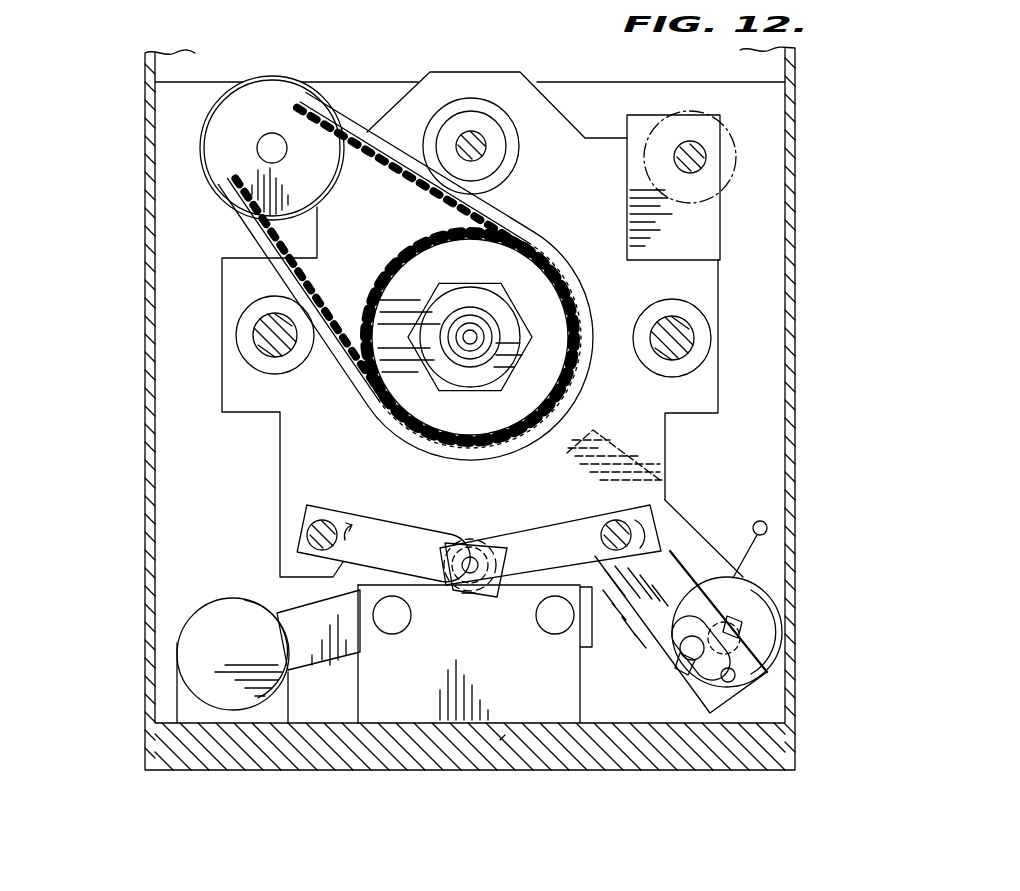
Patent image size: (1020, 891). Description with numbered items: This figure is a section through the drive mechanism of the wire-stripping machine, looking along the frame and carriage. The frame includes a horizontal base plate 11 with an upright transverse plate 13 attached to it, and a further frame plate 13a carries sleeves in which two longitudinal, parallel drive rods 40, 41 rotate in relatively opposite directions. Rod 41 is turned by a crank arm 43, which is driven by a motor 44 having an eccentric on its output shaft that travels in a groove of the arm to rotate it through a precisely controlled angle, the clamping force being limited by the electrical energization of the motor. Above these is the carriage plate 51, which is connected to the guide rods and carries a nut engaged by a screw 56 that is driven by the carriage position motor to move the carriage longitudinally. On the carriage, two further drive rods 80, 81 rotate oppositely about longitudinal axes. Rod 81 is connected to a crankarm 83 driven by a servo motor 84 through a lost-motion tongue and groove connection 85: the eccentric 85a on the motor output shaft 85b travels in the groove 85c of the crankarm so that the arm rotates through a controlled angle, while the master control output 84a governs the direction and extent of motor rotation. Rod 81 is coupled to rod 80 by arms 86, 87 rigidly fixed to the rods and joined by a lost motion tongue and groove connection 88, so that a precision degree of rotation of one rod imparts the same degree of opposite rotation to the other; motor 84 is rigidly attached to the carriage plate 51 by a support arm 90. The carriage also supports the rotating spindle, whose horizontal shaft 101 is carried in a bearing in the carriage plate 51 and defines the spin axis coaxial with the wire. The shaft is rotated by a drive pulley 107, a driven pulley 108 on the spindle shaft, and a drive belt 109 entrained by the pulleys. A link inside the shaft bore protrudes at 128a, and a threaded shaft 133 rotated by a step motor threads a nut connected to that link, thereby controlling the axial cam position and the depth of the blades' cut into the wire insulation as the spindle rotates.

The base plate 11 is at (345, 757).
The upright transverse plate 13 is at (170, 539).
The frame plate 13a is at (505, 735).
The drive rod 40 is at (556, 628).
The drive rod 41 is at (390, 622).
The crank arm 43 is at (313, 650).
The motor 44 is at (195, 645).
The carriage plate 51 is at (548, 135).
The screw 56 is at (702, 157).
The drive rod 80 is at (310, 530).
The drive rod 81 is at (620, 515).
The crankarm 83 is at (640, 605).
The servo motor 84 is at (768, 620).
The master control output 84a is at (762, 553).
The lost-motion tongue and groove connection 85 is at (682, 692).
The eccentric 85a is at (703, 686).
The output shaft 85b is at (748, 632).
The groove 85c is at (736, 675).
The arm 86 is at (515, 545).
The arm 87 is at (378, 525).
The lost motion tongue and groove connection 88 is at (463, 607).
The support arm 90 is at (705, 540).
The shaft 101 is at (474, 312).
The drive pulley 107 is at (248, 98).
The driven pulley 108 is at (408, 262).
The drive belt 109 is at (255, 237).
The link protrusion 128a is at (471, 345).
The threaded shaft 133 is at (468, 140).